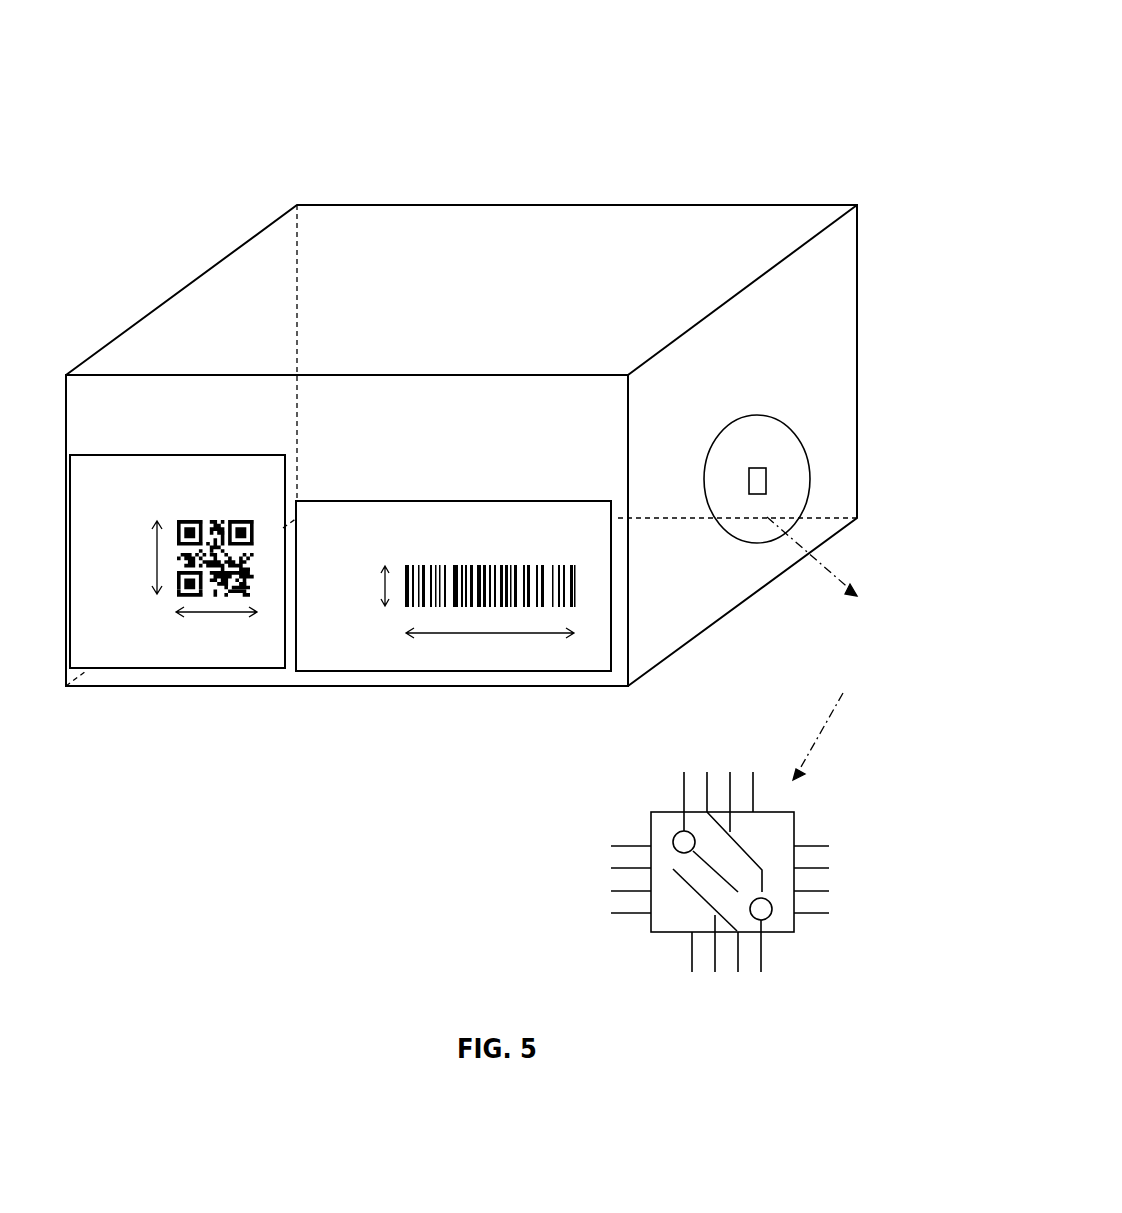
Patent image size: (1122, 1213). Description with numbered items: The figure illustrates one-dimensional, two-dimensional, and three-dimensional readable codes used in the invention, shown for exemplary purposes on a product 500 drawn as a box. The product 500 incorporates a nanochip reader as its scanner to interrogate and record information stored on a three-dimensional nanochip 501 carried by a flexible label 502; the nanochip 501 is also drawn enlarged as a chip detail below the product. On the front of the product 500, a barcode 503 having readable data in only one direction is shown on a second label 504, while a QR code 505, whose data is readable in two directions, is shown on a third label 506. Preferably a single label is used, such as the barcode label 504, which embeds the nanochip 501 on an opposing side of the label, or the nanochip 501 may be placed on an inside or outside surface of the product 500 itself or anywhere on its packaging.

The product 500 is at (703, 61).
The 3D nanochip 501 is at (741, 435).
The flexible label 502 is at (760, 482).
The barcode 503 is at (417, 592).
The second label 504 is at (422, 517).
The QR code 505 is at (118, 478).
The third label 506 is at (177, 590).